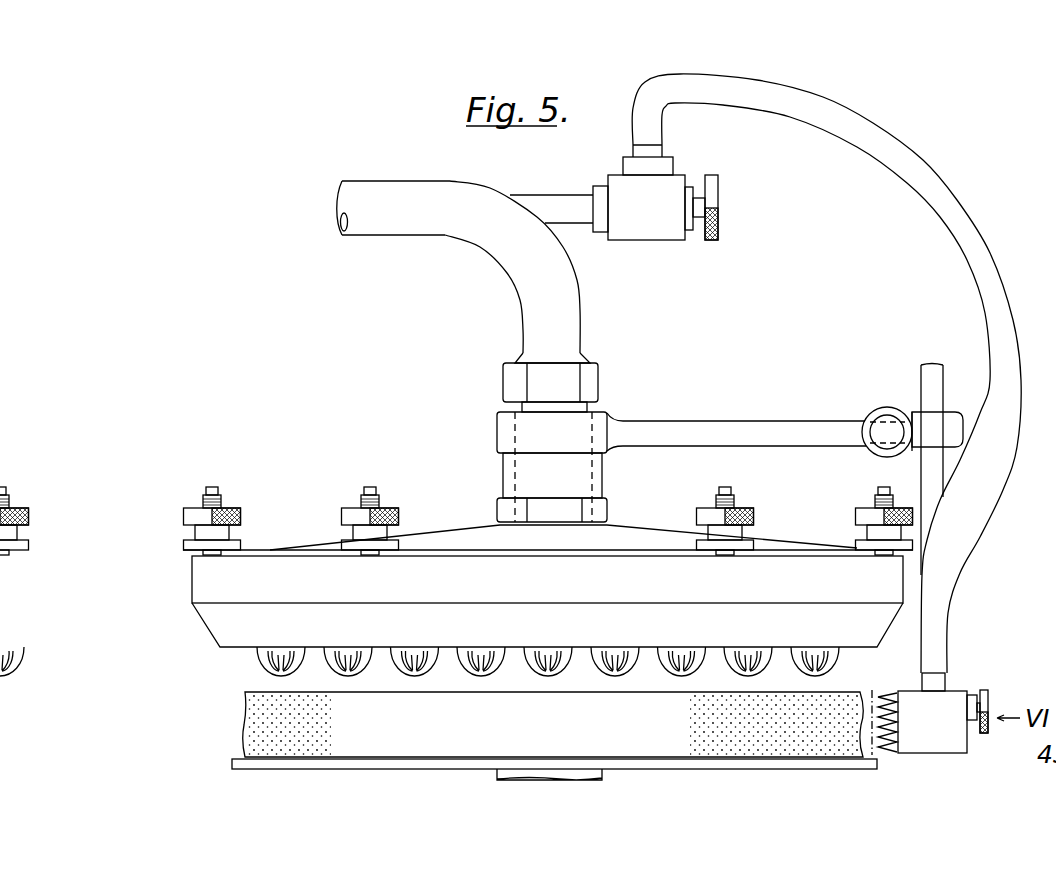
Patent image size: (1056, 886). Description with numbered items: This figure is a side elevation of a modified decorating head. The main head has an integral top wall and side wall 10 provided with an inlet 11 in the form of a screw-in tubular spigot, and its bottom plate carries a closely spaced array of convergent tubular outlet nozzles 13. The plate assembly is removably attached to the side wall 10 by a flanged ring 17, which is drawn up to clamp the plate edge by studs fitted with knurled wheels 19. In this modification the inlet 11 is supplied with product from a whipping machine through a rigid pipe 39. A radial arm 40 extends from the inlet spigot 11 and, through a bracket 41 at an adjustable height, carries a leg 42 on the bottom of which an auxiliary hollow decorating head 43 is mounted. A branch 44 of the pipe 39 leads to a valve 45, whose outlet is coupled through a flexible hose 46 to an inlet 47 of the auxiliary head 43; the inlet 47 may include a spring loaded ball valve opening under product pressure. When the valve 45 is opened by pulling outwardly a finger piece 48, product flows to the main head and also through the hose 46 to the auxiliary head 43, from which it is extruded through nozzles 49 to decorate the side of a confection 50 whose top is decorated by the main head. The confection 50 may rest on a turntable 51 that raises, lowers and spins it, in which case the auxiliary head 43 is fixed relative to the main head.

The integral top wall and side wall 10 is at (448, 538).
The inlet 11 is at (527, 473).
The outlet nozzles 13 is at (258, 662).
The flanged ring 17 is at (205, 590).
The knurled wheels 19 is at (237, 510).
The rigid pipe 39 is at (532, 300).
The radial arm 40 is at (793, 428).
The bracket 41 is at (913, 417).
The leg 42 is at (933, 372).
The auxiliary hollow decorating head 43 is at (952, 705).
The branch 44 is at (548, 203).
The valve 45 is at (647, 232).
The flexible hose 46 is at (957, 217).
The inlet 47 is at (935, 683).
The finger piece 48 is at (716, 202).
The nozzles 49 is at (888, 703).
The confection 50 is at (252, 725).
The turntable 51 is at (232, 760).